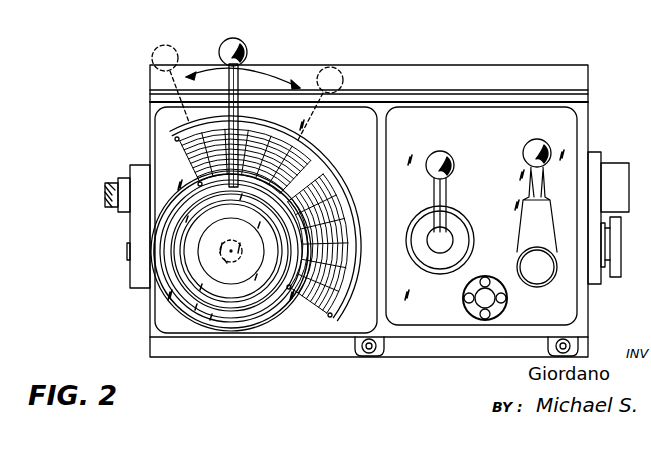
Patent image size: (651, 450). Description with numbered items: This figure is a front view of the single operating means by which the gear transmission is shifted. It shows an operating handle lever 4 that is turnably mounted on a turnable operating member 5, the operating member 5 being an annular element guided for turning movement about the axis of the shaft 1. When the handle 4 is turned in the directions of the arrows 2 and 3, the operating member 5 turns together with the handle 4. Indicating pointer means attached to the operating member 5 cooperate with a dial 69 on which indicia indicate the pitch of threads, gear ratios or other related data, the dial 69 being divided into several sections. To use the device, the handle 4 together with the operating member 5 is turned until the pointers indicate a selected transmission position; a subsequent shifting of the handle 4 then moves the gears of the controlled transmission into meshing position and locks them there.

The shaft 1 is at (226, 259).
The arrow 2 is at (243, 84).
The arrow 3 is at (228, 385).
The operating handle lever 4 is at (235, 88).
The turnable operating member 5 is at (212, 318).
The dial 69 is at (349, 290).